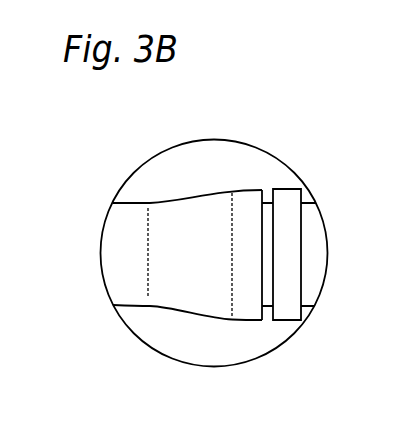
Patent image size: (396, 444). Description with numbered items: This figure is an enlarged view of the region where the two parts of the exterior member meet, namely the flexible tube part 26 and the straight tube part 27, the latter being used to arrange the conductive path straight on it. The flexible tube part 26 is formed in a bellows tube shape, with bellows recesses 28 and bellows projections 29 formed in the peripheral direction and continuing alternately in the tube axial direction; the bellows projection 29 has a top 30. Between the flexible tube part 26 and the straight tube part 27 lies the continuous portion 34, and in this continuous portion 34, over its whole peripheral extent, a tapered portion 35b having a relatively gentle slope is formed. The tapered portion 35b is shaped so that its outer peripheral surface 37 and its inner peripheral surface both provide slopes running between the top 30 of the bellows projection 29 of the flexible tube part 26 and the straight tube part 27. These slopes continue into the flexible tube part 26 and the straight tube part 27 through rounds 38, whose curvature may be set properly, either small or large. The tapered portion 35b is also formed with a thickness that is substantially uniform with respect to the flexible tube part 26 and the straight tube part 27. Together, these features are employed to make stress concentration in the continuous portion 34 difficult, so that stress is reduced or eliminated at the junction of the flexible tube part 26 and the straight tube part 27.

The flexible tube part 26 is at (290, 197).
The straight tube part 27 is at (135, 214).
The bellows recess 28 is at (270, 308).
The bellows projection 29 is at (250, 320).
The top of the bellows projection 30 is at (245, 197).
The continuous portion 34 is at (213, 183).
The tapered portion having a relatively gentle slope 35b is at (187, 208).
The outer peripheral surface 37 is at (178, 298).
The round 38 is at (148, 310).